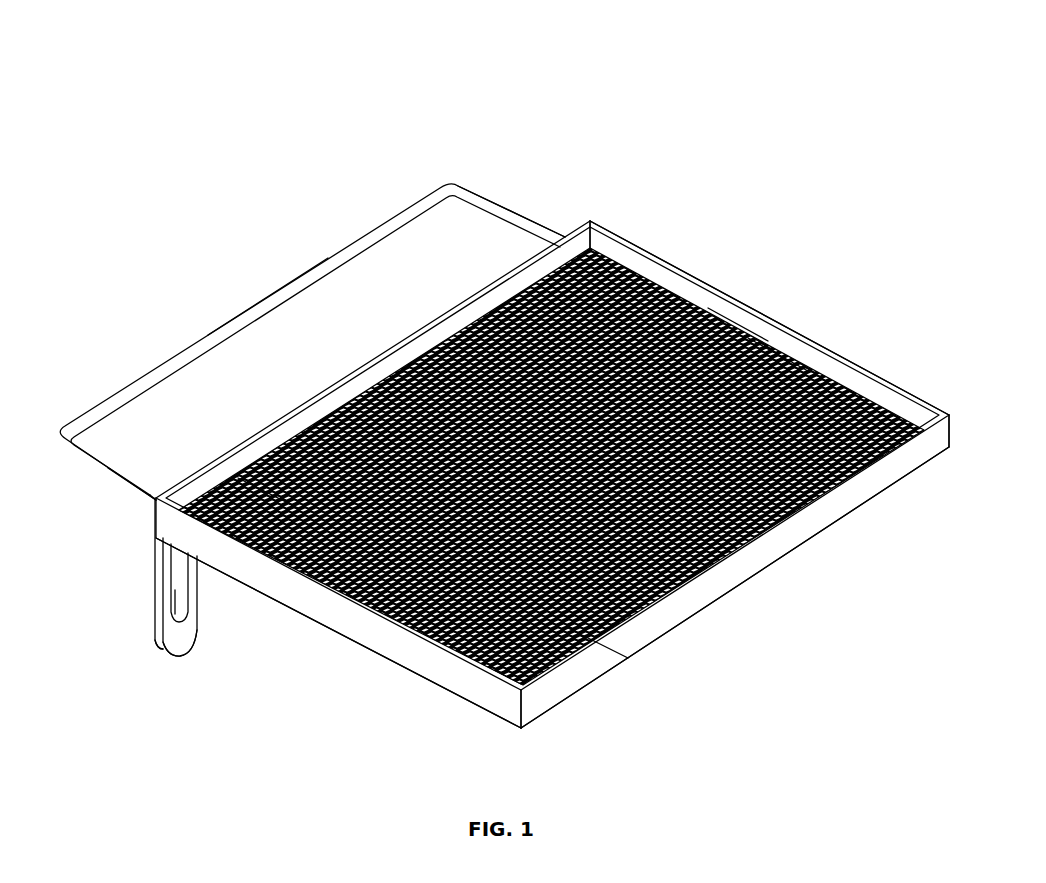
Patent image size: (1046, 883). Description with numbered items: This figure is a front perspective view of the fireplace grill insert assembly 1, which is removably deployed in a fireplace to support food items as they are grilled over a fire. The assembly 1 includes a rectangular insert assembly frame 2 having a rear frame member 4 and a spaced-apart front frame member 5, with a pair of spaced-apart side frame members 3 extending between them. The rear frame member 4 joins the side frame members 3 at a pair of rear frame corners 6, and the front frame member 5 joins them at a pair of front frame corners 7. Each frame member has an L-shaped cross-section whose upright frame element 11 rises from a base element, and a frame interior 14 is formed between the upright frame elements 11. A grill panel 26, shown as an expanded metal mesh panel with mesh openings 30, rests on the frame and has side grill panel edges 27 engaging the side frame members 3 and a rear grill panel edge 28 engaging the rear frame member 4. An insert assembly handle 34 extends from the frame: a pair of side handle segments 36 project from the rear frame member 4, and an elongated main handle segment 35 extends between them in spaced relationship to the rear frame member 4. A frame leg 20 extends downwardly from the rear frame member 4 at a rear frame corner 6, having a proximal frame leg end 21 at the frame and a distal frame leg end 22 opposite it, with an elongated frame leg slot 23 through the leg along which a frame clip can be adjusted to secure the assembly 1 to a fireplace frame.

The fireplace grill insert assembly 1 is at (250, 118).
The insert assembly frame 2 is at (358, 655).
The side frame members 3 is at (830, 332).
The rear frame member 4 is at (354, 352).
The front frame member 5 is at (760, 582).
The rear frame corners 6 is at (582, 211).
The front frame corners 7 is at (943, 440).
The upright frame element 11 is at (431, 318).
The frame interior 14 is at (662, 275).
The frame leg 20 is at (163, 617).
The proximal frame leg end 21 is at (145, 540).
The distal frame leg end 22 is at (170, 650).
The frame leg slot 23 is at (186, 601).
The grill panel 26 is at (740, 322).
The side grill panel edges 27 is at (778, 350).
The rear grill panel edge 28 is at (255, 447).
The mesh openings 30 is at (588, 640).
The insert assembly handle 34 is at (216, 296).
The main handle segment 35 is at (330, 244).
The side handle segments 36 is at (513, 213).